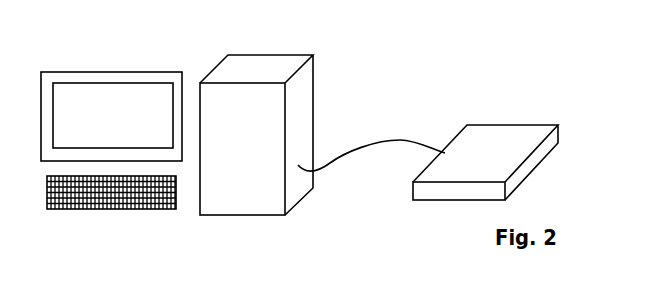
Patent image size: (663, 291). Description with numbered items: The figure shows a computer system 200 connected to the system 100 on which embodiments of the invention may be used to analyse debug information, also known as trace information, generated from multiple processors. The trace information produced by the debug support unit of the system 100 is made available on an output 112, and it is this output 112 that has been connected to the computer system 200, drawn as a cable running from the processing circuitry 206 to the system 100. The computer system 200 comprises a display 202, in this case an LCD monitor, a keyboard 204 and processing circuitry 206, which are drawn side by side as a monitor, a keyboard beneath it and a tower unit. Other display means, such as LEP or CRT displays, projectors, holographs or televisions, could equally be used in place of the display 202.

The computer system 200 is at (114, 52).
The display 202 is at (123, 133).
The keyboard 204 is at (87, 209).
The processing circuitry 206 is at (266, 172).
The output 112 is at (373, 145).
The system 100 is at (502, 172).